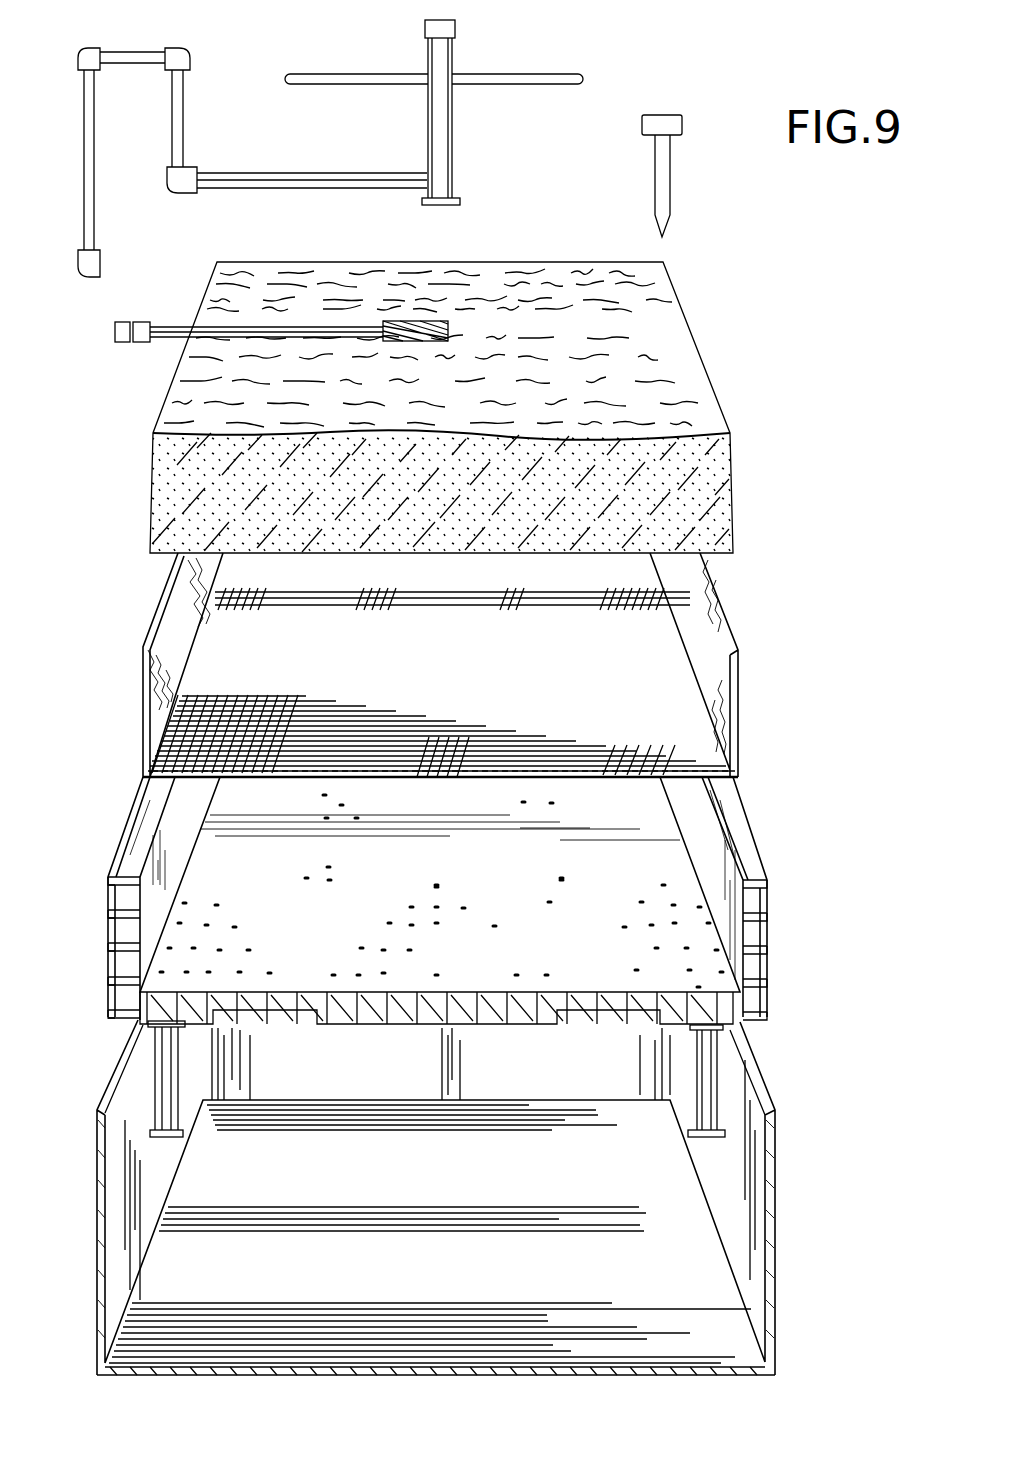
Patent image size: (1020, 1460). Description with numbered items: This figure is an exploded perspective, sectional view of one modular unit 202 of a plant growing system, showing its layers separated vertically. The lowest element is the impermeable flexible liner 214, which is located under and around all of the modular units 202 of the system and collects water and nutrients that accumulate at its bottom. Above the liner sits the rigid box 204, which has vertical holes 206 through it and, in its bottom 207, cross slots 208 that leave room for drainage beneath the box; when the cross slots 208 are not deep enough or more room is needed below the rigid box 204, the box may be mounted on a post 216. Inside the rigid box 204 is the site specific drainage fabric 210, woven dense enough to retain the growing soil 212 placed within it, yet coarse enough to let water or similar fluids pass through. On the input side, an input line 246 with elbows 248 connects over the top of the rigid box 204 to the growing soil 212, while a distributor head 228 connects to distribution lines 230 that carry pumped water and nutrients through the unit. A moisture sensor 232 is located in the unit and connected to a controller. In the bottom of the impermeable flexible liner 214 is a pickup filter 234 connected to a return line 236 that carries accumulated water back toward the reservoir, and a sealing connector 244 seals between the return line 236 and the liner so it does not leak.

The modular unit 202 is at (752, 318).
The rigid box 204 is at (441, 957).
The vertical holes 206 is at (548, 902).
The bottom 207 is at (440, 884).
The cross slots 208 is at (285, 1012).
The site specific drainage fabric 210 is at (643, 683).
The growing soil 212 is at (685, 495).
The impermeable flexible liner 214 is at (703, 1288).
The post 216 is at (163, 1058).
The distributor head 228 is at (455, 30).
The distribution lines 230 is at (350, 74).
The moisture sensor 232 is at (672, 115).
The pickup filter 234 is at (432, 322).
The return line 236 is at (167, 323).
The sealing connector 244 is at (140, 345).
The input line 246 is at (307, 173).
The elbows 248 is at (160, 66).